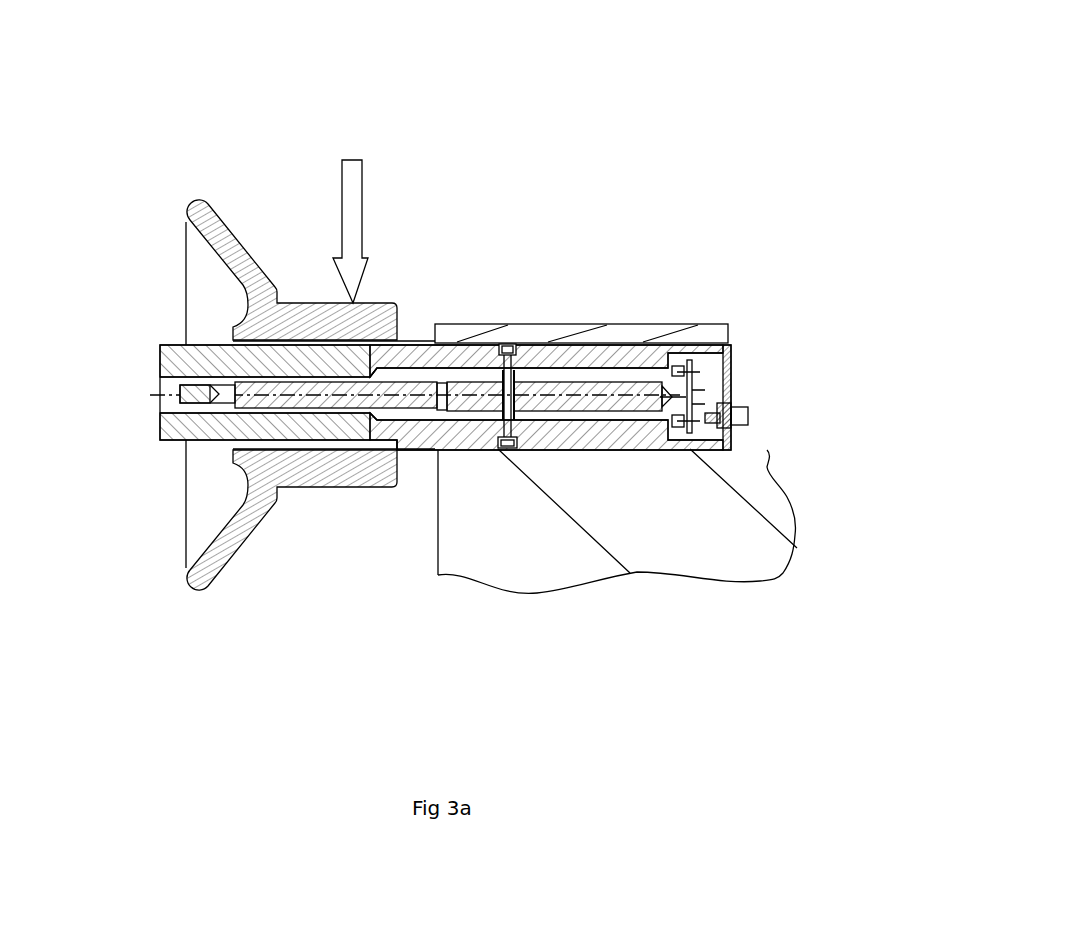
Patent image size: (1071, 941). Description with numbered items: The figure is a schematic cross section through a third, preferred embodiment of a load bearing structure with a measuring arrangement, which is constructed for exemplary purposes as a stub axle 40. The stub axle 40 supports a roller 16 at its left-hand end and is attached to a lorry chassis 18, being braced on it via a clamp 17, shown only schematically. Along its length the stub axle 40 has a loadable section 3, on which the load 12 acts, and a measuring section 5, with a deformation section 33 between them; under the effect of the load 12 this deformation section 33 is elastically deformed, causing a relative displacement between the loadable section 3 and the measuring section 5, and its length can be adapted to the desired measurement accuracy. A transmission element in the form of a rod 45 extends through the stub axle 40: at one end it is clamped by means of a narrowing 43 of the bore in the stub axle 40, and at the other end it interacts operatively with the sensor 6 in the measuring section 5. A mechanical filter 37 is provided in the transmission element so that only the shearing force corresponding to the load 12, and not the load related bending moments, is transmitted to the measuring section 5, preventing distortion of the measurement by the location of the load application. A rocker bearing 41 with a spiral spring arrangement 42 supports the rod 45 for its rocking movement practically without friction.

The loadable section 3 is at (175, 595).
The measuring section 5 is at (432, 690).
The sensor 6 is at (700, 371).
The load 12 is at (350, 222).
The roller 16 is at (220, 243).
The clamp 17 is at (633, 324).
The chassis 18 is at (695, 537).
The deformation section 33 is at (370, 618).
The mechanical filter 37 is at (425, 397).
The stub axle 40 is at (597, 95).
The rocker bearing 41 is at (470, 377).
The spiral spring arrangement 42 is at (520, 412).
The narrowing 43 is at (320, 405).
The rod 45 is at (138, 390).